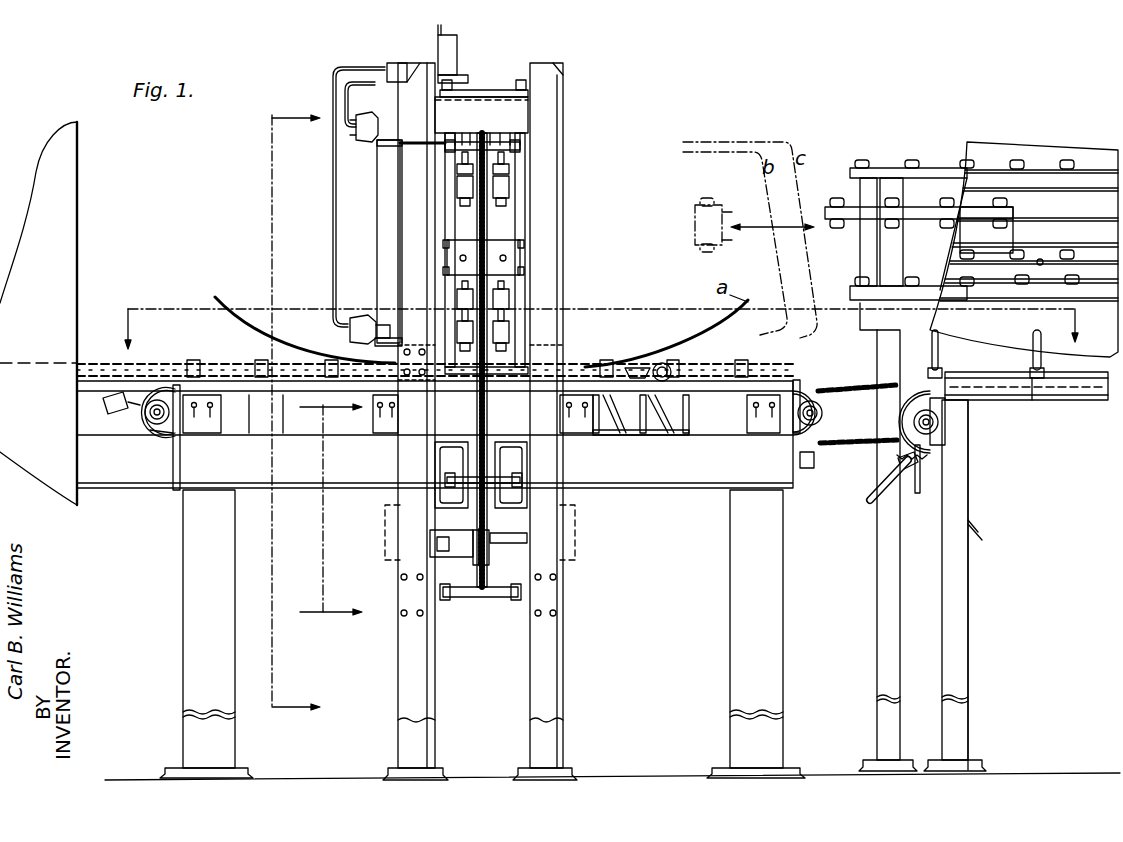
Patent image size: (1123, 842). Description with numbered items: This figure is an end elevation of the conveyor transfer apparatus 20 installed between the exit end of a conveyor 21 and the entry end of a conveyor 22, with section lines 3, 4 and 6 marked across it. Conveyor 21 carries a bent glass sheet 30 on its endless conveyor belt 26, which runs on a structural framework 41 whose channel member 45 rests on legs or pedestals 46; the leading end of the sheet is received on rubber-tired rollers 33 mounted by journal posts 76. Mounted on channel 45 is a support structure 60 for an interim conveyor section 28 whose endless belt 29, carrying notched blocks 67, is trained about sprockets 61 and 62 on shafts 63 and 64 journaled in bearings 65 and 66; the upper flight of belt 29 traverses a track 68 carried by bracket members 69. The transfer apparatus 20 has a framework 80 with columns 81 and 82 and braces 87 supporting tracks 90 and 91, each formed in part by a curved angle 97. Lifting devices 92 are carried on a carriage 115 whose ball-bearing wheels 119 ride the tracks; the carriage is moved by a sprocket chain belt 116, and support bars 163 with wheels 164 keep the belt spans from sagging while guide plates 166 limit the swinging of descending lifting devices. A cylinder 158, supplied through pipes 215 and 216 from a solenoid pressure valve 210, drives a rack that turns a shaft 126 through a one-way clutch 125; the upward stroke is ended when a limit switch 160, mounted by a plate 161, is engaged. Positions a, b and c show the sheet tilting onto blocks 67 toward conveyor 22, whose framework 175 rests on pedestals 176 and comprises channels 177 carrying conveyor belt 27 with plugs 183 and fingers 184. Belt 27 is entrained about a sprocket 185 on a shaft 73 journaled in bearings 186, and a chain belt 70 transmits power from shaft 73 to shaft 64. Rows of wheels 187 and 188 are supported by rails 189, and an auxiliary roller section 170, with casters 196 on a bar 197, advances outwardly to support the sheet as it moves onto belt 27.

The conveyor transfer apparatus 20 is at (378, 62).
The solenoid pressure valve 210 is at (396, 63).
The plate 161 is at (445, 17).
The limit switch 160 is at (450, 65).
The support bars 163 is at (475, 90).
The framework 80 is at (547, 85).
The track 91 is at (530, 90).
The braces 87 is at (498, 117).
The column 82 is at (563, 126).
The ball-bearing wheels 164 is at (520, 150).
The track 90 is at (440, 155).
The lifting devices 92 is at (462, 188).
The curved angle 97 is at (522, 215).
The cylinder 158 is at (390, 208).
The column 81 is at (410, 230).
The sprocket chain belt 116 is at (487, 222).
The ball-bearing wheels 119 is at (524, 244).
The carriage 115 is at (500, 265).
The conveyor 22 is at (893, 162).
The rollers or wheels 187 is at (918, 166).
The rails 189 is at (947, 168).
The bent glass sheet 30 is at (300, 352).
The auxiliary roller section 170 is at (837, 198).
The bar 197 is at (1030, 248).
The conveyor 21 is at (199, 308).
The section line 3 is at (133, 307).
The endless conveyor belt 26 is at (173, 362).
The notched blocks 67 is at (258, 364).
The interim conveyor section 28 is at (633, 368).
The rollers 33 is at (666, 364).
The rollers or wheels 188 is at (925, 290).
The casters 196 is at (1040, 268).
The plug or finger 184 is at (870, 498).
The chain belt 70 is at (850, 386).
The sprocket 61 is at (135, 410).
The shaft 63 is at (140, 432).
The endless belt 29 is at (155, 428).
The bearing 65 is at (180, 430).
The support structure 60 is at (249, 396).
The track 68 is at (284, 398).
The bracket members 69 is at (386, 420).
The journal posts 76 is at (660, 415).
The bearing 66 is at (800, 438).
The conveyor belt 27 is at (896, 410).
The sprocket 62 is at (824, 425).
The shaft 64 is at (815, 432).
The shaft 73 is at (930, 422).
The bearings 186 is at (938, 438).
The plug 183 is at (1037, 400).
The channels 177 is at (1090, 402).
The channel member 45 is at (101, 480).
The structural framework 41 is at (141, 490).
The guide plates 166 is at (450, 460).
The legs or pedestals 46 is at (182, 557).
The one-way clutch 125 is at (430, 545).
The shaft 126 is at (505, 545).
The pedestals 176 is at (888, 548).
The framework 175 is at (968, 481).
The sprocket 185 is at (917, 470).
The section line 4 is at (260, 129).
The section line 6 is at (318, 431).
The pipe 215 is at (360, 82).
The pipe 216 is at (333, 90).